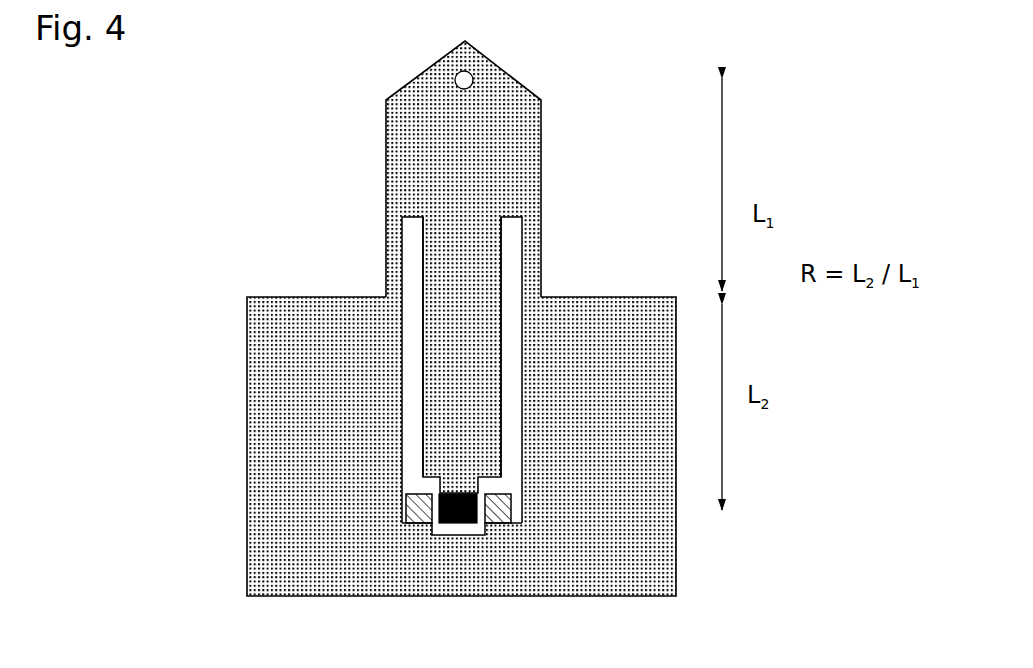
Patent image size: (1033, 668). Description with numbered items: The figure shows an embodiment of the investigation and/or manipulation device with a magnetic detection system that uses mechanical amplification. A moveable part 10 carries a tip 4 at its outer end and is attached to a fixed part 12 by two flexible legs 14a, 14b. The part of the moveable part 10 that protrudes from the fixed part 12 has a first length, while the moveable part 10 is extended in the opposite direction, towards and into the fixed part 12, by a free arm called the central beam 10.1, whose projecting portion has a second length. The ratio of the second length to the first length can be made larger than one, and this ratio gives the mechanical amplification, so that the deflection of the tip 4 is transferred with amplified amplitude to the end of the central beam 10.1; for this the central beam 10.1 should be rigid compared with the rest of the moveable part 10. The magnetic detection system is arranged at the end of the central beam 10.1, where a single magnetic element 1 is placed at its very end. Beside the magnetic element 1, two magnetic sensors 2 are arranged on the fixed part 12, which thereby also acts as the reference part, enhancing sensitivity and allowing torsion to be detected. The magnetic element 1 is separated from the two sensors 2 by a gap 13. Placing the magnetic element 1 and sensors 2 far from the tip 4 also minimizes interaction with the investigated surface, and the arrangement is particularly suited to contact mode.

The magnetic element 1 is at (457, 523).
The magnetic sensor 2 is at (418, 525).
The tip 4 is at (472, 74).
The moveable part 10 is at (508, 124).
The central beam 10.1 is at (455, 372).
The fixed part 12 is at (265, 461).
The gap 13 is at (412, 236).
The flexible leg 14a is at (530, 270).
The flexible leg 14b is at (396, 268).